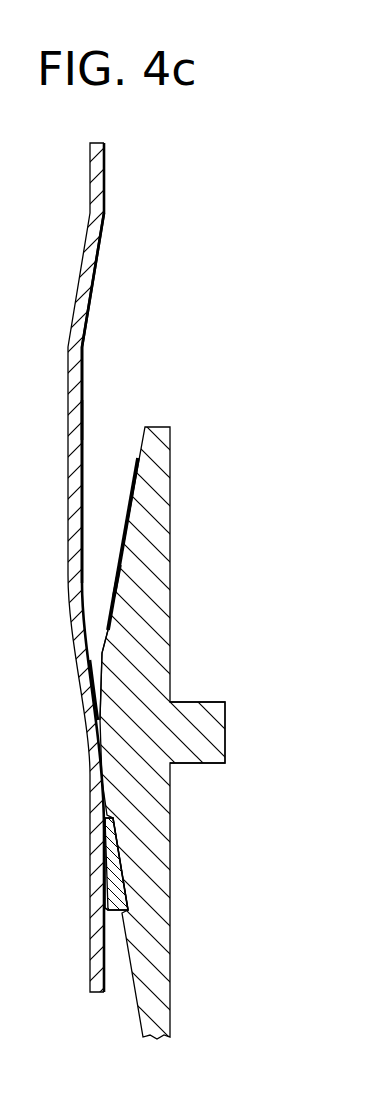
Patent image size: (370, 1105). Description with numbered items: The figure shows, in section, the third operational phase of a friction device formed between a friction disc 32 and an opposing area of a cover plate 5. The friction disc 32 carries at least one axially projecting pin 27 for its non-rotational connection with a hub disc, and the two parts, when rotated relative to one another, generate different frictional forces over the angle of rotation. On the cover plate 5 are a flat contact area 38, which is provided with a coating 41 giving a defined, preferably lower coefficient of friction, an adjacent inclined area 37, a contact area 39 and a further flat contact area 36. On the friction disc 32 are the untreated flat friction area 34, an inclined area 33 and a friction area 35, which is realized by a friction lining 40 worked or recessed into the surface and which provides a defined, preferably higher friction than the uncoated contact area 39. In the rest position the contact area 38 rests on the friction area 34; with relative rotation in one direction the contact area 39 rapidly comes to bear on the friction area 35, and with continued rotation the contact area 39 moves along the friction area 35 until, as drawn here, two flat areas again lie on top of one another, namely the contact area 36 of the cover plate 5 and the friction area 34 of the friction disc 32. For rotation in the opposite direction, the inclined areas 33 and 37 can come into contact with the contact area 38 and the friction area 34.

The cover plate 5 is at (90, 270).
The axially projecting pin 27 is at (210, 753).
The friction disc 32 is at (158, 477).
The inclined area 33 is at (110, 503).
The friction area 34 is at (84, 688).
The friction area 35 is at (96, 898).
The contact area 36 is at (116, 175).
The inclined area 37 is at (110, 258).
The contact area 38 is at (94, 369).
The contact area 39 is at (109, 646).
The friction lining 40 is at (106, 845).
The coating 41 is at (82, 420).